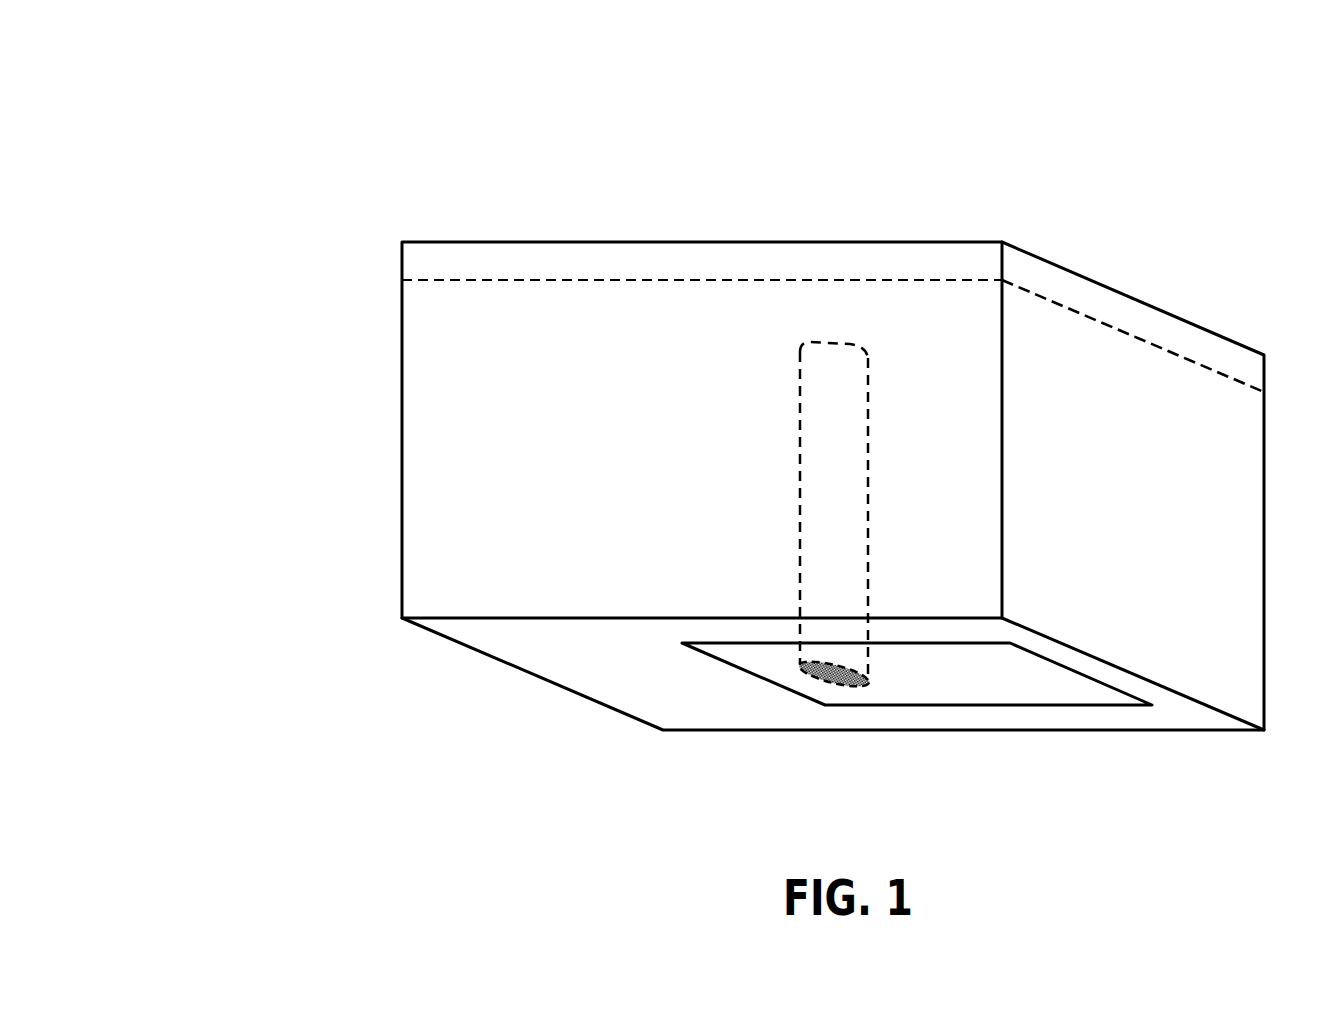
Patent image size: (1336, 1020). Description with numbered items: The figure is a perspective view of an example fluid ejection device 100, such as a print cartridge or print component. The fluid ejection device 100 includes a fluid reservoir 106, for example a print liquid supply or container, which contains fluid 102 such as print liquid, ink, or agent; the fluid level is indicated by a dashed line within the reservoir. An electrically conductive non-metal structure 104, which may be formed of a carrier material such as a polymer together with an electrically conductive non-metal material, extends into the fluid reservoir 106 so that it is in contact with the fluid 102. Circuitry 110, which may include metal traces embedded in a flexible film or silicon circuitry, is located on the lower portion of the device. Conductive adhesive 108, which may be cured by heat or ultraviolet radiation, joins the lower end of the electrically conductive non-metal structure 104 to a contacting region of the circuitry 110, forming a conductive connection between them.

The fluid ejection device 100 is at (700, 409).
The fluid 102 is at (535, 282).
The electrically conductive non-metal structure 104 is at (800, 458).
The fluid reservoir 106 is at (402, 274).
The conductive adhesive 108 is at (835, 676).
The circuitry 110 is at (760, 677).